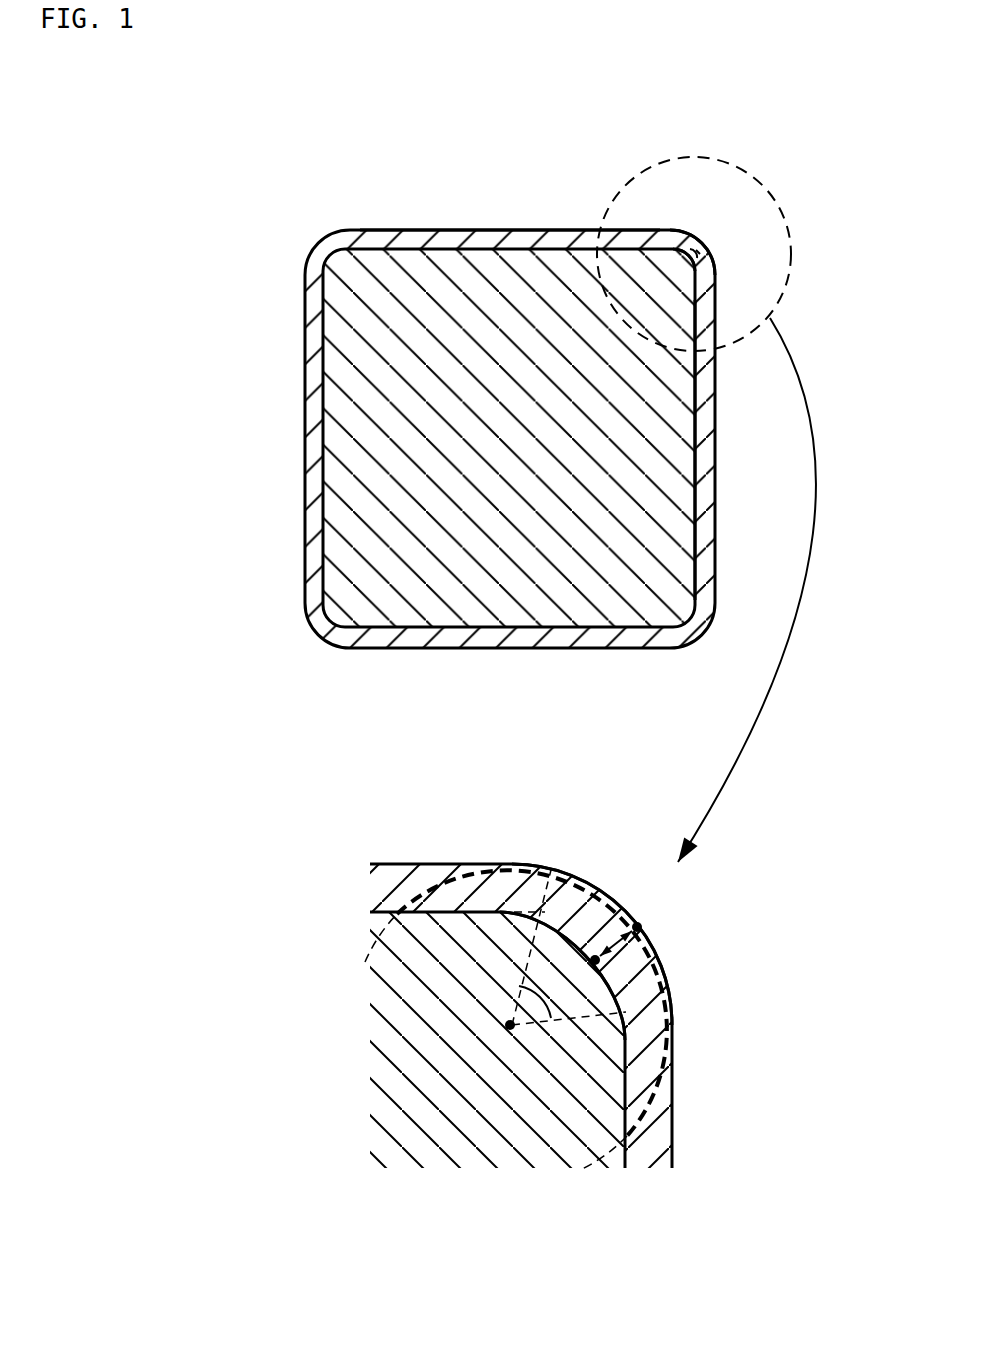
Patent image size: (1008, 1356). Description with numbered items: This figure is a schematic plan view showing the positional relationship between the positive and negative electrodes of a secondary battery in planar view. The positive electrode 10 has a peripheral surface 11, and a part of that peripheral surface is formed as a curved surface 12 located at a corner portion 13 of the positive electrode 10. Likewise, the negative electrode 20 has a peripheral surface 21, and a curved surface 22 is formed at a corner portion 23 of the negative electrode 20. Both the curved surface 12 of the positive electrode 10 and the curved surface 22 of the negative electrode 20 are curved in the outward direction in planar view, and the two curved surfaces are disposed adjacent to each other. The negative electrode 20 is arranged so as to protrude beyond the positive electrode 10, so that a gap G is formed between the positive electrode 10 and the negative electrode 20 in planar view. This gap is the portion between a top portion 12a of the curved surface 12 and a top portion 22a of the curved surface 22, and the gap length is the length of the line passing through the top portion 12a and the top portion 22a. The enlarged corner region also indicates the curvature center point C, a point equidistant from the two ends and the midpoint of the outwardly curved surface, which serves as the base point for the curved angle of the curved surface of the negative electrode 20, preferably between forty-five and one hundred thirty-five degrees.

The positive electrode 10 is at (322, 332).
The peripheral surface 11 is at (697, 423).
The curved surface 12 is at (700, 258).
The top portion 12a is at (598, 962).
The corner portion 13 is at (698, 247).
The negative electrode 20 is at (452, 229).
The peripheral surface 21 is at (535, 229).
The curved surface 22 is at (697, 247).
The top portion 22a is at (637, 927).
The corner portion 23 is at (703, 252).
The curvature center point C is at (510, 1025).
The gap G is at (620, 950).